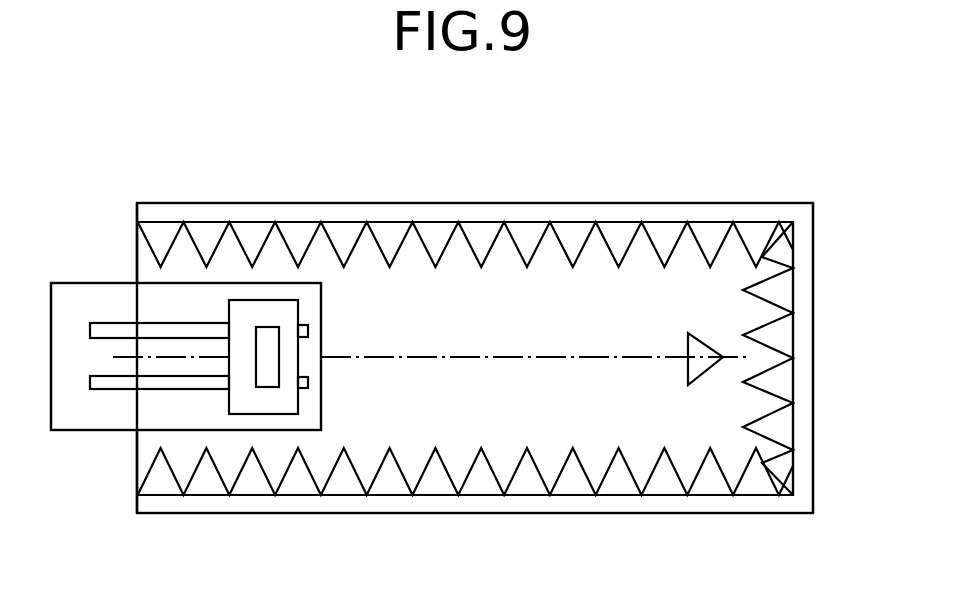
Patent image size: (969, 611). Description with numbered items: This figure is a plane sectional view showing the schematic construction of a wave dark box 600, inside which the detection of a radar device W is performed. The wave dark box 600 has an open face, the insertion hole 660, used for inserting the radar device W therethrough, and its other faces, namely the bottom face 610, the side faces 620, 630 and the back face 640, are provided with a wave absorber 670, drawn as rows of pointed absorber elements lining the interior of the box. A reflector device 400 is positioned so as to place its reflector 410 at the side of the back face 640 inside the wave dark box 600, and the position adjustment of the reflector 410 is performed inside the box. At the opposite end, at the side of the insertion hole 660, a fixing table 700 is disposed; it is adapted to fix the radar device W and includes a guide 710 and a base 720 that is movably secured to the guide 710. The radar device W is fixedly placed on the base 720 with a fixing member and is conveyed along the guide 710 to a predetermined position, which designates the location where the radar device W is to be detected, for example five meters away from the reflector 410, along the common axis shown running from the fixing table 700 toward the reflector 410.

The wave dark box 600 is at (697, 184).
The bottom face 610 is at (505, 272).
The side face 620 is at (328, 210).
The side face 630 is at (370, 500).
The back face 640 is at (798, 248).
The insertion hole 660 is at (147, 443).
The wave absorber 670 is at (620, 240).
The fixing table 700 is at (123, 275).
The guide 710 is at (102, 380).
The base 720 is at (288, 312).
The radar device W is at (280, 349).
The reflector 410 is at (735, 456).
The reflector device 400 is at (702, 367).